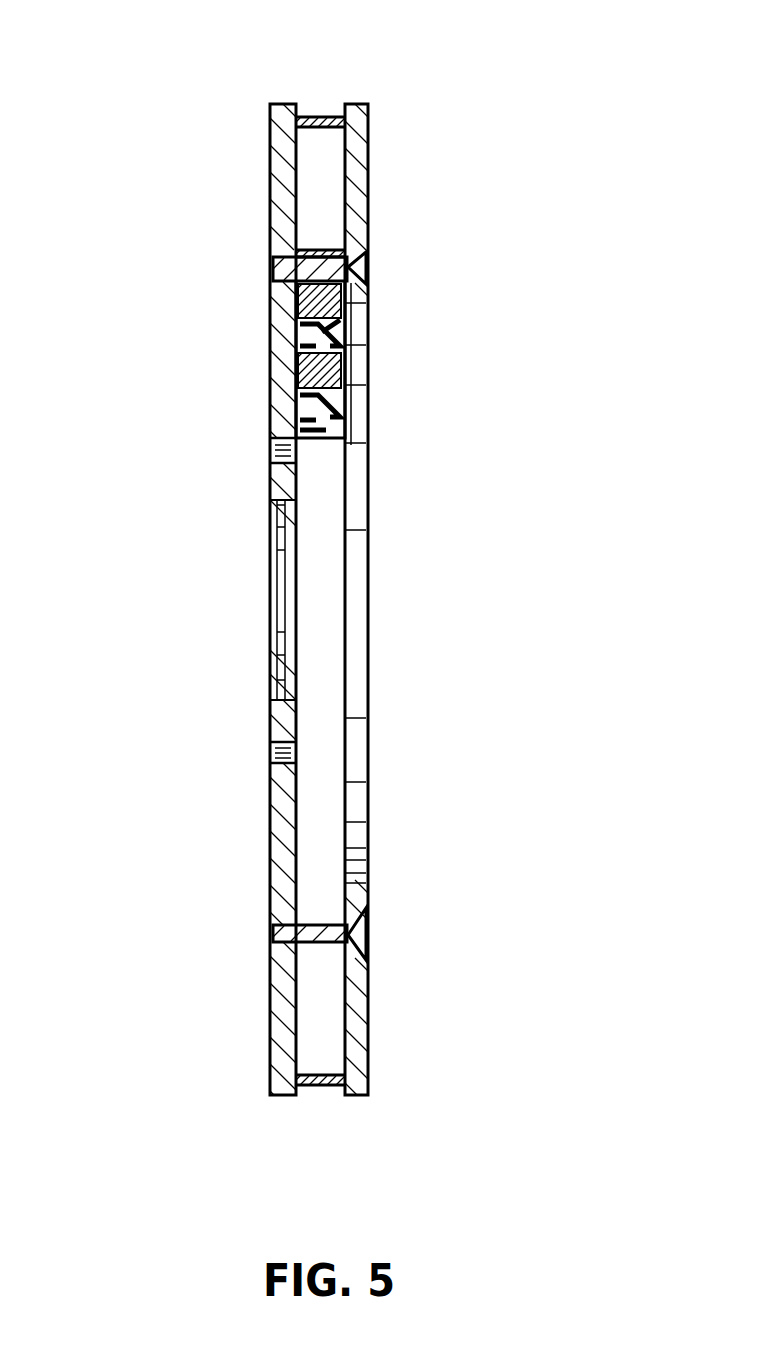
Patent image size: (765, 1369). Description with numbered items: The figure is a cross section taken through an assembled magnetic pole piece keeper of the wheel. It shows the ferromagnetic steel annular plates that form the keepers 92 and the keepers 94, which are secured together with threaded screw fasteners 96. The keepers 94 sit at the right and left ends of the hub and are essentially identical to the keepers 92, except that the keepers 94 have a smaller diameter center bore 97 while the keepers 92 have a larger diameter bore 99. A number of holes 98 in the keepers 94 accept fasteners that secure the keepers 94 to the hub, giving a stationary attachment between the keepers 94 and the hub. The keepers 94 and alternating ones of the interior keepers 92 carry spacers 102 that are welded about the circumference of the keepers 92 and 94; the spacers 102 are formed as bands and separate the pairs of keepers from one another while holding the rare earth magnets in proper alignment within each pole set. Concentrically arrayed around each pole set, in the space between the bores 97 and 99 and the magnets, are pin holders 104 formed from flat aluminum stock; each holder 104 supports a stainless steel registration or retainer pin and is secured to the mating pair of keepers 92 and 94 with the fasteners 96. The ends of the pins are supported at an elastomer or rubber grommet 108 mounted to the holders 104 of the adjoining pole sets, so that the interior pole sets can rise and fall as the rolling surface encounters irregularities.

The keeper 92 is at (360, 202).
The keeper 94 is at (280, 197).
The threaded screw fastener 96 is at (360, 267).
The center bore 97 is at (273, 660).
The hole 98 is at (285, 450).
The bore 99 is at (358, 323).
The spacer 102 is at (316, 113).
The pin holder 104 is at (242, 592).
The grommet 108 is at (300, 405).